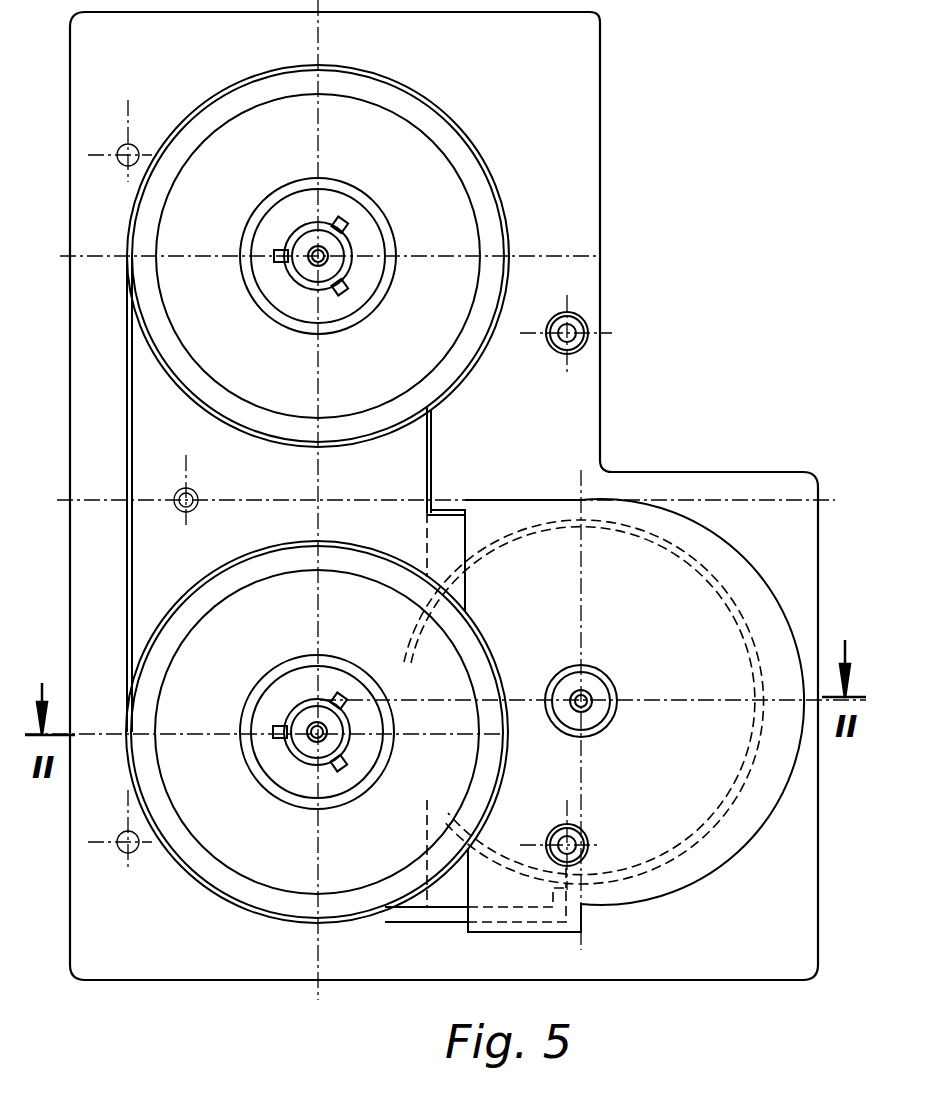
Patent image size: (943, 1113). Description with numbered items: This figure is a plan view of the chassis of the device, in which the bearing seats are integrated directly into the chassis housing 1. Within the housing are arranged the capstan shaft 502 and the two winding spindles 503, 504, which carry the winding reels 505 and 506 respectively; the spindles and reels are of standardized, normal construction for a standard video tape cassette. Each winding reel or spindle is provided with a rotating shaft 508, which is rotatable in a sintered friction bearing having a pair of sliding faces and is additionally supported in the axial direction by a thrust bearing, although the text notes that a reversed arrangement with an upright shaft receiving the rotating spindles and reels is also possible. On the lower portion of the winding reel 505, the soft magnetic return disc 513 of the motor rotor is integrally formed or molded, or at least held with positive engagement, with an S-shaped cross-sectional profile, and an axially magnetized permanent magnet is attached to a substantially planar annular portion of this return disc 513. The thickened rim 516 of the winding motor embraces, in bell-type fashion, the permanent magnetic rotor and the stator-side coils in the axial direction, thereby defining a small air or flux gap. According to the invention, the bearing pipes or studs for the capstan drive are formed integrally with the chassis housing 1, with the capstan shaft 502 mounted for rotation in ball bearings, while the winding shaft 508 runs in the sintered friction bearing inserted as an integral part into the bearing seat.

The chassis housing 1 is at (577, 93).
The capstan shaft 502 is at (590, 690).
The winding spindle 503 is at (349, 232).
The winding spindle 504 is at (327, 200).
The winding reel 505 is at (377, 768).
The winding reel 506 is at (392, 273).
The rotating shaft 508 is at (304, 742).
The soft magnetic return disc 513 is at (430, 349).
The thickened rim 516 is at (257, 893).